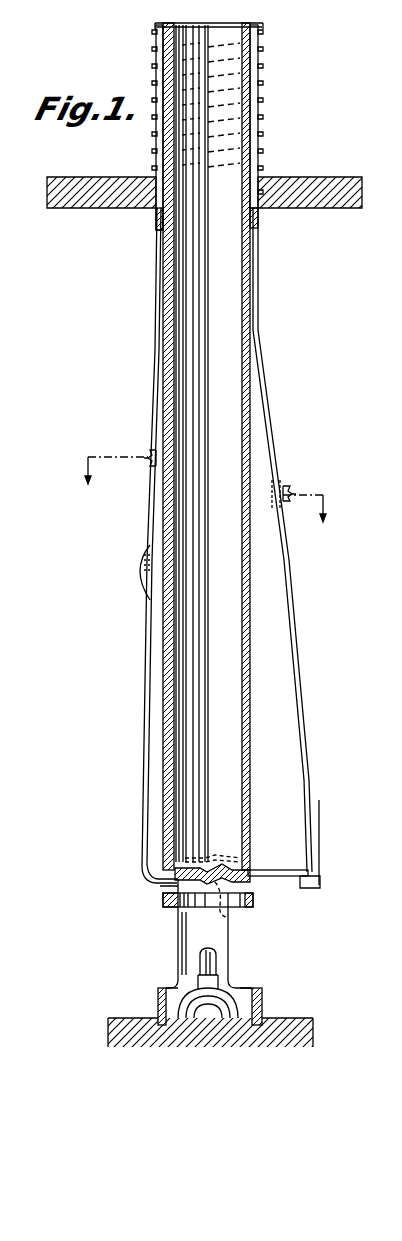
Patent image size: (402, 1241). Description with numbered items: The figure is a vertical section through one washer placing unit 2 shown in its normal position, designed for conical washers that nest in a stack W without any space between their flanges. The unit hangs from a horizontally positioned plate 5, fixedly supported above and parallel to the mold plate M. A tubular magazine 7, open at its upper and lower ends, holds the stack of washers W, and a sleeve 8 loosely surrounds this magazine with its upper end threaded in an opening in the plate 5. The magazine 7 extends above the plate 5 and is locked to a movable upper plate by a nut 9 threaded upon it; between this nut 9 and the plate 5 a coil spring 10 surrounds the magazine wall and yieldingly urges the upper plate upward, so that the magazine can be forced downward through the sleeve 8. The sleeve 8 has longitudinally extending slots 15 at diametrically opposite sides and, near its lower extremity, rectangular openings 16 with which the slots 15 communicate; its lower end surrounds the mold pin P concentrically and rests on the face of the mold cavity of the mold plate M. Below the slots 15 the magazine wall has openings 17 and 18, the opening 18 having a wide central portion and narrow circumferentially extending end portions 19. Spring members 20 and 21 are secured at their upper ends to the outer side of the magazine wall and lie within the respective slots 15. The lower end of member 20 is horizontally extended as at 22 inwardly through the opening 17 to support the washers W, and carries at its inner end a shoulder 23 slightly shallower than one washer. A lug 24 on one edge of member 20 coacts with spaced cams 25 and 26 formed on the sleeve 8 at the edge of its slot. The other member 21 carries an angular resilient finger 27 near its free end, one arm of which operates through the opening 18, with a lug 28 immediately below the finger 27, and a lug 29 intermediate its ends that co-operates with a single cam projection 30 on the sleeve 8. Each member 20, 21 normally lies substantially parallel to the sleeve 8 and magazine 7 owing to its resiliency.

The fire extinguisher 2 is at (397, 567).
The plate 5 is at (305, 186).
The tubular magazine 7 is at (236, 254).
The sleeve 8 is at (160, 222).
The nut 9 is at (258, 30).
The coil spring 10 is at (252, 79).
The slots 15 is at (165, 696).
The rectangular openings 16 is at (230, 966).
The opening 17 is at (172, 894).
The opening 18 is at (250, 890).
The end portions 19 is at (228, 918).
The spring member 20 is at (158, 354).
The spring member 21 is at (263, 382).
The horizontal extension 22 is at (184, 906).
The shoulder 23 is at (165, 878).
The lug 24 is at (150, 463).
The cam 25 is at (155, 445).
The cam 26 is at (142, 570).
The resilient finger 27 is at (285, 866).
The lug 28 is at (312, 886).
The lug 29 is at (292, 497).
The cam projection 30 is at (278, 486).
The washers W is at (232, 866).
The mold plate M is at (297, 1036).
The pin P is at (215, 1012).